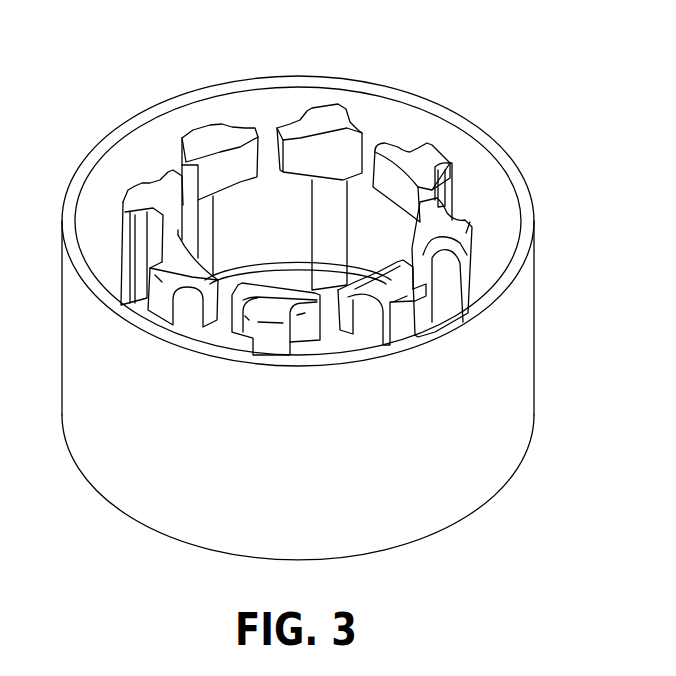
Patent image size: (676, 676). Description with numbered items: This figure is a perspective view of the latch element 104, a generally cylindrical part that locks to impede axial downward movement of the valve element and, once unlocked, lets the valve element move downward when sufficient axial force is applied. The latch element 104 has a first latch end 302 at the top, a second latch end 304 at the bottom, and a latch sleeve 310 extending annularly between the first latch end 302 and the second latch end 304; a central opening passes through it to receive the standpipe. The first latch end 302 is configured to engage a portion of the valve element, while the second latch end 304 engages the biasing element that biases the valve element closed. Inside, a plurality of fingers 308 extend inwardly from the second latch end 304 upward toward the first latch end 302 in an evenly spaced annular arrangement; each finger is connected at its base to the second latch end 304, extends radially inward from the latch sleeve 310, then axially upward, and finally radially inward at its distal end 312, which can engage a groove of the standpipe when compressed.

The latch element 104 is at (90, 88).
The first latch end 302 is at (160, 104).
The second latch end 304 is at (120, 516).
The plurality of fingers 308 is at (291, 204).
The latch sleeve 310 is at (515, 362).
The distal end 312 is at (397, 186).